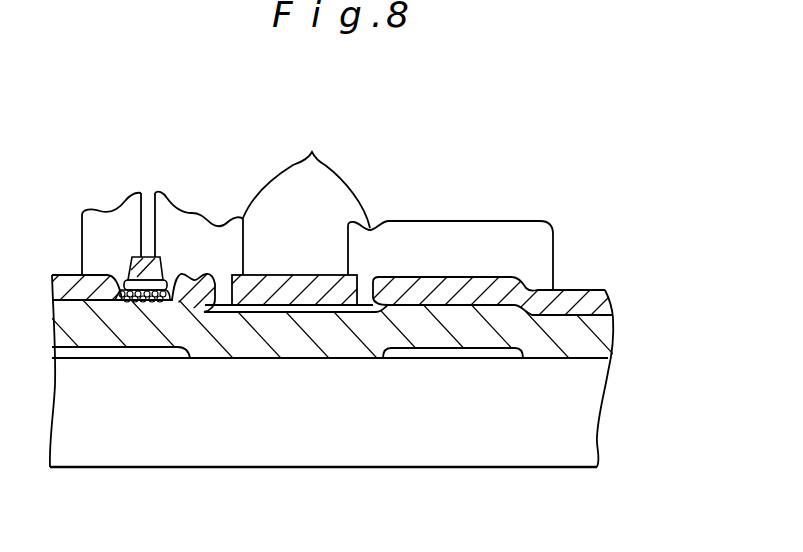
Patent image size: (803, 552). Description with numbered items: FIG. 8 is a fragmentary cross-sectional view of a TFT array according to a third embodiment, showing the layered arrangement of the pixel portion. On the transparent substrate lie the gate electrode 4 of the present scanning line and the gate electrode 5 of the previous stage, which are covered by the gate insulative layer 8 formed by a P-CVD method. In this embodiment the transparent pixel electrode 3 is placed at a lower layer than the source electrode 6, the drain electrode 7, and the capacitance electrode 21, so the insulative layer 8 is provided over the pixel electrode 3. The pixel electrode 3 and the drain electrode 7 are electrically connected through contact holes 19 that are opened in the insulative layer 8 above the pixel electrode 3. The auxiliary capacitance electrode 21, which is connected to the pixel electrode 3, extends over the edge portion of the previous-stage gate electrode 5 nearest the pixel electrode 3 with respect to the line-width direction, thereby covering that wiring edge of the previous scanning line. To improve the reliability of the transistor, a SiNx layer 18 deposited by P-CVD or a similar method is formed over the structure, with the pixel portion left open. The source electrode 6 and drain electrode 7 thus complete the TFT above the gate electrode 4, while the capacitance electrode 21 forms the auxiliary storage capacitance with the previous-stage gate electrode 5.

The pixel electrode 3 is at (284, 292).
The gate electrode 4 is at (125, 352).
The gate electrode at the previous stage 5 is at (442, 353).
The source electrode 6 is at (112, 210).
The drain electrode 7 is at (201, 211).
The gate insulative layer 8 is at (590, 340).
The SiNx layer 18 is at (570, 297).
The contact holes 19 is at (306, 171).
The capacitance electrode 21 is at (461, 222).